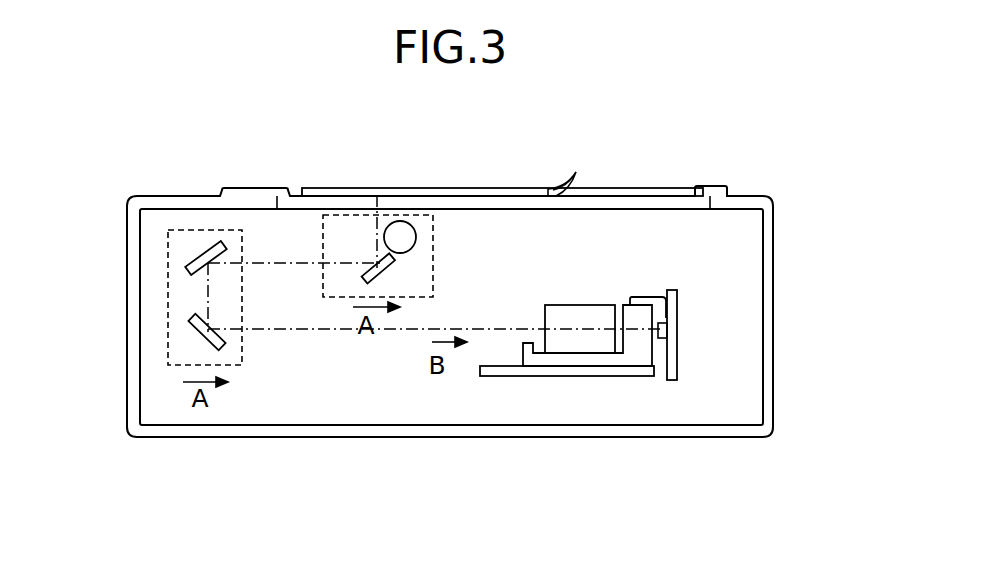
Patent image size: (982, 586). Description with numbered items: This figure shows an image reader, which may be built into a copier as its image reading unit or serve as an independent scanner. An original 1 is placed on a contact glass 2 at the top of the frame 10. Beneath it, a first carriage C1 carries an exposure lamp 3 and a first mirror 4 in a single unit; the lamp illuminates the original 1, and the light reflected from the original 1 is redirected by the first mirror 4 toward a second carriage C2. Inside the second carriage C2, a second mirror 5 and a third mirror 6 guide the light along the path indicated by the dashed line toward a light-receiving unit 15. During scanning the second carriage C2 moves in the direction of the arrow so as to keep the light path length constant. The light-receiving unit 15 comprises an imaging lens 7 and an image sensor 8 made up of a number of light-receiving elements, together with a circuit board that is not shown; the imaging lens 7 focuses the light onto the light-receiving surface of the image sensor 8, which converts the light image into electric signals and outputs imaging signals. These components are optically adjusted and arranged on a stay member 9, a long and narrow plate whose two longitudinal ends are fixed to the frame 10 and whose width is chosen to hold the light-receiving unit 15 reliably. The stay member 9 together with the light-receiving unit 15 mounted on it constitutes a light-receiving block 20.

The original 1 is at (563, 184).
The contact glass 2 is at (642, 195).
The exposure lamp 3 is at (417, 236).
The first mirror 4 is at (390, 267).
The second mirror 5 is at (218, 247).
The third mirror 6 is at (221, 349).
The imaging lens 7 is at (597, 305).
The image sensor 8 is at (667, 347).
The stay member 9 is at (508, 376).
The frame 10 is at (775, 313).
The light-receiving unit 15 is at (543, 280).
The light-receiving block 20 is at (614, 326).
The first carriage C1 is at (433, 290).
The second carriage C2 is at (168, 303).